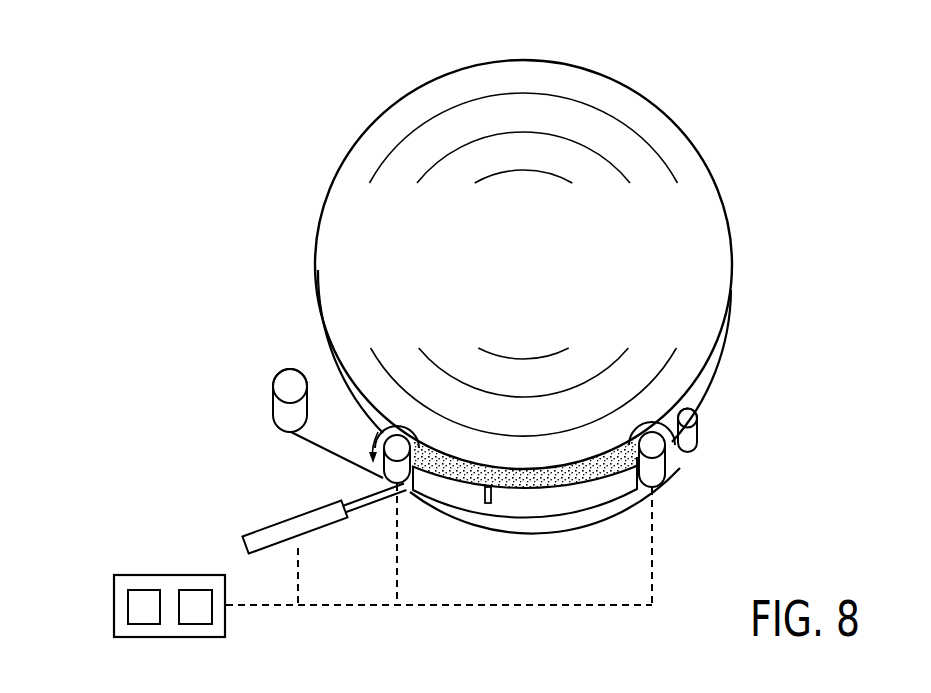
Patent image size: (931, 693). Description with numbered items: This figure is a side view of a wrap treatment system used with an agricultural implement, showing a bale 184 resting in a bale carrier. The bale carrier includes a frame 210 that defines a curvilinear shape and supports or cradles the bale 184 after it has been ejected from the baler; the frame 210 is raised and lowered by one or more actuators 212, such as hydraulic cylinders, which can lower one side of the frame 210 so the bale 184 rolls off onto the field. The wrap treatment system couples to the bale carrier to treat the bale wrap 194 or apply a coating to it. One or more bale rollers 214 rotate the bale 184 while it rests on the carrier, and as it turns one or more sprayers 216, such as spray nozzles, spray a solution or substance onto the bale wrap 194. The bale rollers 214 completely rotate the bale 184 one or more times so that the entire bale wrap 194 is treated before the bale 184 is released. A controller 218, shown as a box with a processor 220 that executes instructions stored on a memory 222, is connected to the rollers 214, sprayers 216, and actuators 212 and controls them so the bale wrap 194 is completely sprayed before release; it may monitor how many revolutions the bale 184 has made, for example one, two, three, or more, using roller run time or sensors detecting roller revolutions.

The bale 184 is at (336, 247).
The bale wrap 194 is at (734, 311).
The bale rollers 214 is at (400, 428).
The actuators 212 is at (295, 517).
The sprayers 216 is at (491, 496).
The frame 210 is at (575, 518).
The controller 218 is at (129, 580).
The processor 220 is at (143, 590).
The memory 222 is at (195, 590).